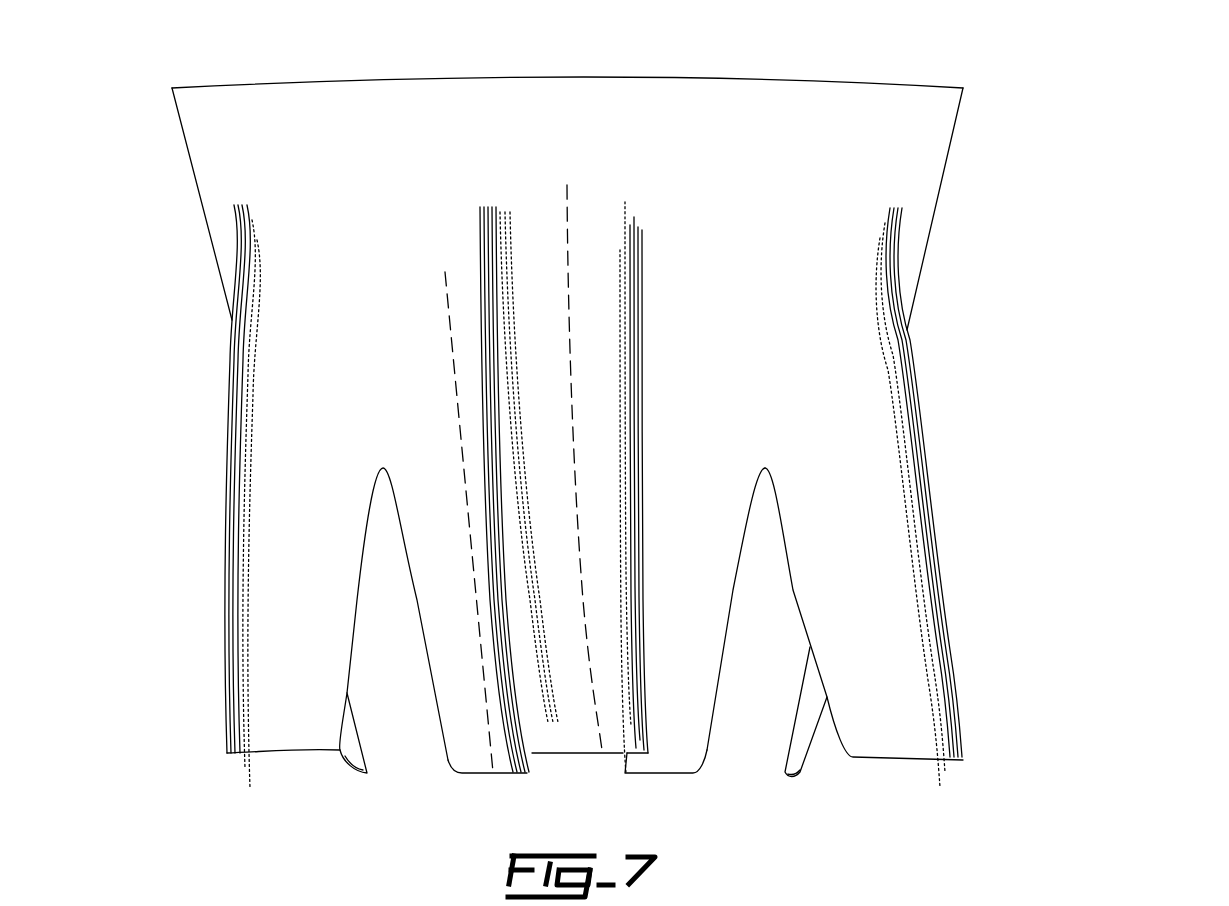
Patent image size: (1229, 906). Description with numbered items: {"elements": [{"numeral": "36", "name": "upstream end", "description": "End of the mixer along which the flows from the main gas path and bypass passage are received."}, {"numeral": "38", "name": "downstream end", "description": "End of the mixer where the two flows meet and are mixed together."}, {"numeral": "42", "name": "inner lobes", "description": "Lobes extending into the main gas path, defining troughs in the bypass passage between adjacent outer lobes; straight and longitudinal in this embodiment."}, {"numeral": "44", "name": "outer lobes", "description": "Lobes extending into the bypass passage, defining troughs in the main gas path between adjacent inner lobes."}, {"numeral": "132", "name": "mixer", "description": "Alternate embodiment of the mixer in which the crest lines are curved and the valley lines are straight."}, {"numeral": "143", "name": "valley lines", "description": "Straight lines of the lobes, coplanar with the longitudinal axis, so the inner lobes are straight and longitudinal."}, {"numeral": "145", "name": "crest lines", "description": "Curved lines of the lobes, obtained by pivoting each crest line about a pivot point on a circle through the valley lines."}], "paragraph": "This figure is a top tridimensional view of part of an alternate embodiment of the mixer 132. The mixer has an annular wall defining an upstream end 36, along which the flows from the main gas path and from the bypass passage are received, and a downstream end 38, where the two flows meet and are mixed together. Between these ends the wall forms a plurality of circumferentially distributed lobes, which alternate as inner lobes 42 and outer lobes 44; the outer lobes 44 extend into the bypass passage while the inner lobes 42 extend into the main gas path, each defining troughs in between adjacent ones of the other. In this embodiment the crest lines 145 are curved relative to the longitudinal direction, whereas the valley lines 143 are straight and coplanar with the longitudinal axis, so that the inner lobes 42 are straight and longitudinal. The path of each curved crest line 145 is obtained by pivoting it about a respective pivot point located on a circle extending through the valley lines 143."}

The upper edge of panel 36 is at (603, 77).
The side edge of panel 38 is at (958, 717).
The slit opening 42 is at (687, 745).
The flap 44 is at (893, 740).
The pleated panel assembly 132 is at (1115, 331).
The first fold line 143 is at (450, 350).
The second fold line 145 is at (570, 297).